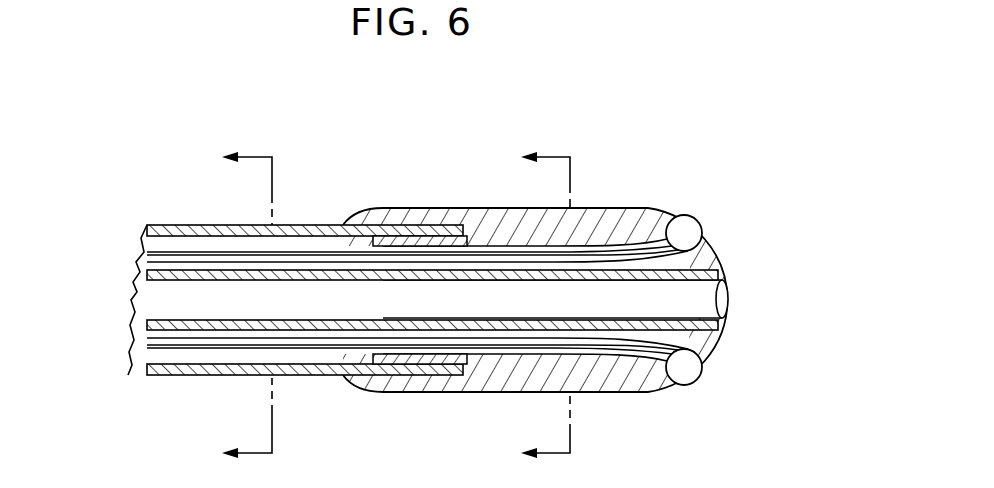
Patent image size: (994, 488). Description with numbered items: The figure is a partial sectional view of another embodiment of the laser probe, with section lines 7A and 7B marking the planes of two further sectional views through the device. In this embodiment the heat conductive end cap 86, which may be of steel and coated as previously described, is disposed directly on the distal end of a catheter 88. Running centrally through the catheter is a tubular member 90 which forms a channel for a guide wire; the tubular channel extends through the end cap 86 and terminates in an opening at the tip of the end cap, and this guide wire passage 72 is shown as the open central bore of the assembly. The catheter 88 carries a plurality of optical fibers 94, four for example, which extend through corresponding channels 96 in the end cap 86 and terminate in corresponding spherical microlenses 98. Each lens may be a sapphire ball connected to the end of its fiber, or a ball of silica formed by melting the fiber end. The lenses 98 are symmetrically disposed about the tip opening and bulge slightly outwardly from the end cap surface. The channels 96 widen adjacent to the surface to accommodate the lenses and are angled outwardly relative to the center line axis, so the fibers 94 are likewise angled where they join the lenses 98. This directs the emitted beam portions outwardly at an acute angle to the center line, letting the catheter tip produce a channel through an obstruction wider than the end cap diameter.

The central lumen 72 is at (728, 303).
The heat conductive end cap 86 is at (628, 209).
The catheter 88 is at (142, 378).
The tubular member 90 is at (138, 300).
The optical fibers 94 is at (140, 254).
The channels 96 is at (490, 242).
The spherical microlenses 98 is at (697, 226).
The section line 7A is at (225, 306).
The section line 7B is at (523, 306).